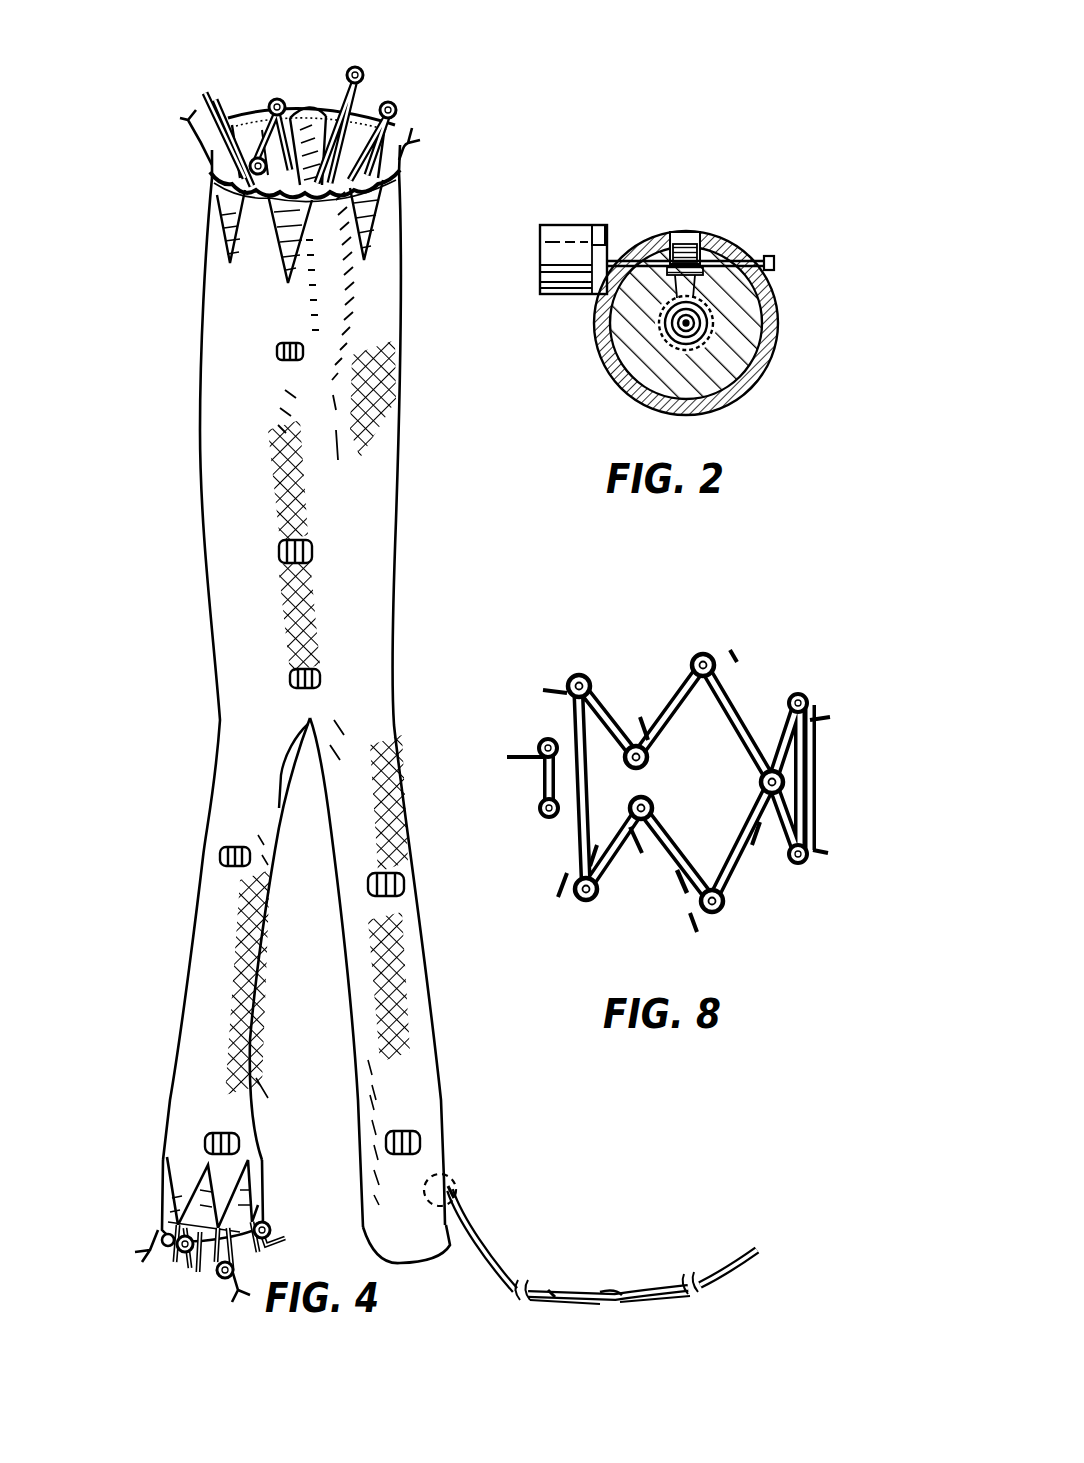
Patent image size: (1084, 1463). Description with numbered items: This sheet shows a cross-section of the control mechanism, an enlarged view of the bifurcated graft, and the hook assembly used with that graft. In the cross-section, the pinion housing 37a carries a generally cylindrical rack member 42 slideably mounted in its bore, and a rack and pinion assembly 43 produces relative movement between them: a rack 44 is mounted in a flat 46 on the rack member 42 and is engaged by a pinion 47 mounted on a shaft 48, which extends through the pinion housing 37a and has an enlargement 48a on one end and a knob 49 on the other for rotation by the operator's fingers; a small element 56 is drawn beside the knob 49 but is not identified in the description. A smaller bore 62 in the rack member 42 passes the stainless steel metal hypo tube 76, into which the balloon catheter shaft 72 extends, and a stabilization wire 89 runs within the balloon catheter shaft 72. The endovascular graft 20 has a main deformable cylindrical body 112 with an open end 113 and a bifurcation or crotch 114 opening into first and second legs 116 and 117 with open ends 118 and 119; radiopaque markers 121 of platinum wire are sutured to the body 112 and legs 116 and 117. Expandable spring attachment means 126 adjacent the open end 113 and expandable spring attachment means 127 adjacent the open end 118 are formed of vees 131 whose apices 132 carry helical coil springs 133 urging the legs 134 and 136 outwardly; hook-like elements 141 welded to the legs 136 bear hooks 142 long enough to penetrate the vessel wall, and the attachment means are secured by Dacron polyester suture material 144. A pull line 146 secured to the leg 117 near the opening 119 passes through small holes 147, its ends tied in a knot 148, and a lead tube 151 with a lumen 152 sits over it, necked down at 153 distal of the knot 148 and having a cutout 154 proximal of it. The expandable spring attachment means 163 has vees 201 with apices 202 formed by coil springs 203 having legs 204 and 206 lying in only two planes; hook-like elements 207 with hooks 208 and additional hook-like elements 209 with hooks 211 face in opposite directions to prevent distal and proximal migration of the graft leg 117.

In FIG. 4, the endovascular graft 20 is at (130, 378).
In FIG. 4, the main deformable cylindrical body 112 is at (383, 563).
In FIG. 4, the open end 113 is at (290, 110).
In FIG. 4, the bifurcation or crotch 114 is at (306, 730).
In FIG. 4, the first leg 116 is at (196, 920).
In FIG. 4, the second leg 117 is at (416, 960).
In FIG. 4, the open end 118 is at (188, 1284).
In FIG. 4, the open end 119 is at (437, 1256).
In FIG. 4, the radiopaque markers 121 is at (305, 352).
In FIG. 4, the expandable spring attachment means 126 is at (205, 182).
In FIG. 4, the expandable spring attachment means 127 is at (150, 1312).
In FIG. 4, the vees 131 is at (345, 48).
In FIG. 4, the apices 132 is at (392, 100).
In FIG. 4, the helical coil springs 133 is at (265, 100).
In FIG. 4, the legs 134 is at (395, 118).
In FIG. 4, the legs 136 is at (312, 96).
In FIG. 4, the hook-like elements 141 is at (355, 70).
In FIG. 4, the hooks 142 is at (192, 120).
In FIG. 4, the Dacron polyester suture material 144 is at (268, 275).
In FIG. 4, the pull line 146 is at (447, 1160).
In FIG. 4, the small holes 147 is at (455, 1186).
In FIG. 4, the knot 148 is at (577, 1301).
In FIG. 4, the lead tube 151 is at (497, 1260).
In FIG. 4, the lumen 152 is at (618, 1302).
In FIG. 4, the necked down region 153 is at (550, 1292).
In FIG. 4, the cutout 154 is at (618, 1290).
In FIG. 2, the pinion housing 37a is at (740, 398).
In FIG. 2, the rack member 42 is at (728, 365).
In FIG. 2, the rack and pinion assembly 43 is at (697, 185).
In FIG. 2, the rack 44 is at (775, 300).
In FIG. 2, the flat 46 is at (650, 232).
In FIG. 2, the pinion 47 is at (682, 245).
In FIG. 2, the shaft 48 is at (737, 262).
In FIG. 2, the enlargement 48a is at (772, 262).
In FIG. 2, the knob 49 is at (545, 262).
In FIG. 2, the pin 56 is at (597, 224).
In FIG. 2, the bore 62 is at (650, 395).
In FIG. 2, the balloon catheter shaft 72 is at (670, 338).
In FIG. 2, the metal hypo tube 76 is at (715, 345).
In FIG. 2, the stabilization wire 89 is at (660, 318).
In FIG. 8, the expandable spring attachment means 163 is at (765, 595).
In FIG. 8, the vees 201 is at (648, 652).
In FIG. 8, the apices 202 is at (696, 680).
In FIG. 8, the coil springs 203 is at (700, 650).
In FIG. 8, the legs or struts 204 is at (762, 755).
In FIG. 8, the legs 206 is at (672, 685).
In FIG. 8, the hook-like elements 207 is at (738, 696).
In FIG. 8, the hooks 208 is at (735, 646).
In FIG. 8, the additional hook-like elements 209 is at (672, 880).
In FIG. 8, the hooks 211 is at (552, 870).